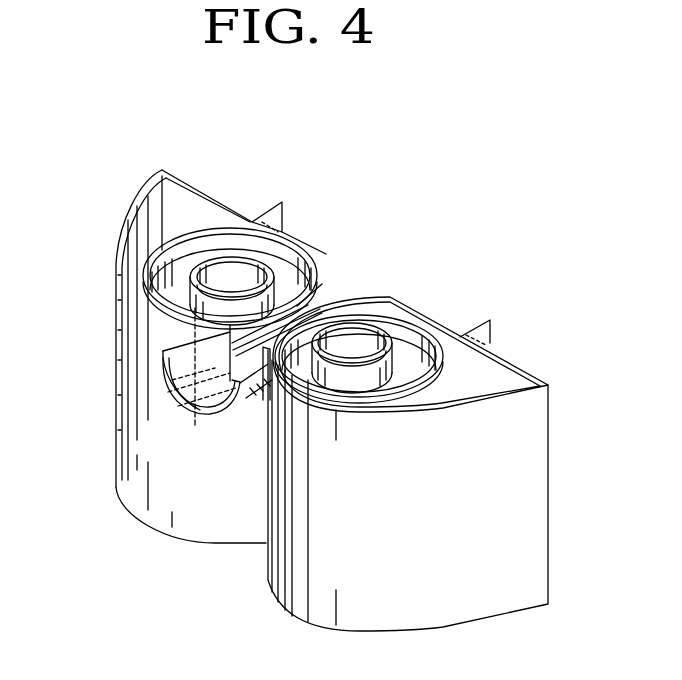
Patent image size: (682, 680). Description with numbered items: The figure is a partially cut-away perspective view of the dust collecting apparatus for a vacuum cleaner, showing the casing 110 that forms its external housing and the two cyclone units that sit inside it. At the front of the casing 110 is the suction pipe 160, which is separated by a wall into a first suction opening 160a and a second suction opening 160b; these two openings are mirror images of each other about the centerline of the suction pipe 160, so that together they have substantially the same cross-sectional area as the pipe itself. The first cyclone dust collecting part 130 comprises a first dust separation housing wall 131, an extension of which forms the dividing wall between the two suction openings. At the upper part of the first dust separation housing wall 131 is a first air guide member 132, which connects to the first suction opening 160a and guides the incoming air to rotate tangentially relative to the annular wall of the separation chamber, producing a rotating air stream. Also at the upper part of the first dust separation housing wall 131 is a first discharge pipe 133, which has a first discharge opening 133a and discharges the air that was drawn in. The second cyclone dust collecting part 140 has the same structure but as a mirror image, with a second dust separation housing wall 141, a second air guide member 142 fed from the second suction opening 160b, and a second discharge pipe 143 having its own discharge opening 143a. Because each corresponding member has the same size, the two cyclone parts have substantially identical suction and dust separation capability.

The casing 110 is at (537, 573).
The first cyclone dust collecting part 130 is at (445, 297).
The first dust separation housing wall 131 is at (435, 391).
The first air guide member 132 is at (298, 362).
The first discharge pipe 133 is at (360, 355).
The first discharge opening 133a is at (446, 350).
The second cyclone dust collecting part 140 is at (213, 158).
The second dust separation housing wall 141 is at (178, 236).
The second air guide member 142 is at (290, 294).
The second discharge pipe 143 is at (243, 260).
The hole of boss 143a is at (217, 275).
The suction pipe 160 is at (162, 350).
The first suction opening 160a is at (263, 366).
The second suction opening 160b is at (195, 360).